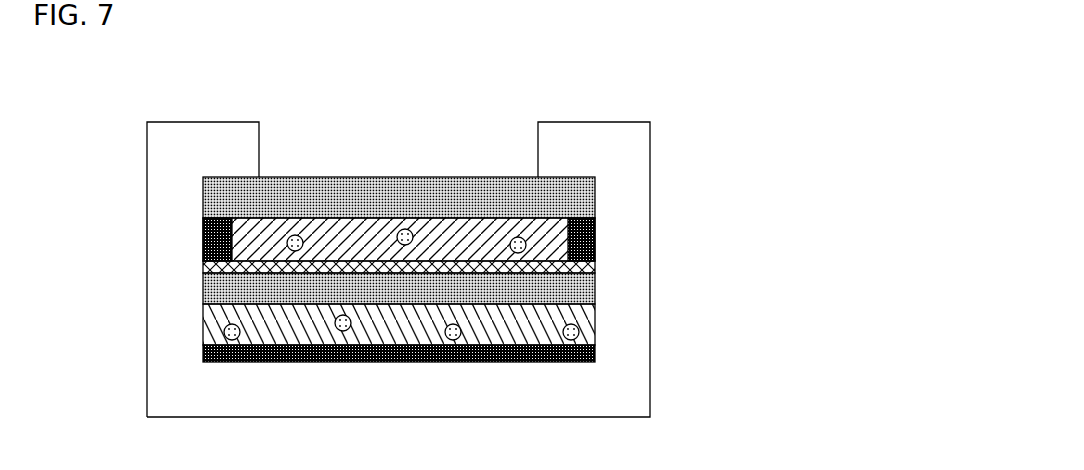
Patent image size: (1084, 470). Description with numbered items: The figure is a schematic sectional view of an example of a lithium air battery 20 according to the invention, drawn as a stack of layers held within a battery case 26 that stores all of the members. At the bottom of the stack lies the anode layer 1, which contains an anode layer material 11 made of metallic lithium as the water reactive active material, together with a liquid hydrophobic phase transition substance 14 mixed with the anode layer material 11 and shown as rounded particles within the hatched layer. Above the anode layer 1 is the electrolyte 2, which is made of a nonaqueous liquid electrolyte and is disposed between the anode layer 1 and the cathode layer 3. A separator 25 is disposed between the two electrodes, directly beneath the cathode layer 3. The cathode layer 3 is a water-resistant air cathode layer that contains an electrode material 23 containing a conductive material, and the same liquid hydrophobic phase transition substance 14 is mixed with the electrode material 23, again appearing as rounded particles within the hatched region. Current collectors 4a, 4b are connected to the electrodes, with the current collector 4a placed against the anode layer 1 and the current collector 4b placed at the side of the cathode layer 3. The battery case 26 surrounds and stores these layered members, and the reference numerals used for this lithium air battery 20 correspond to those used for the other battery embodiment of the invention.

The lithium air battery 20 is at (674, 88).
The battery case 26 is at (622, 186).
The cathode layer 3 is at (438, 236).
The electrode material 23 is at (537, 238).
The liquid hydrophobic phase transition substance 14 is at (526, 245).
The current collector 4b is at (203, 238).
The separator 25 is at (255, 270).
The electrolyte 2 is at (595, 288).
The anode layer 1 is at (492, 321).
The anode layer material 11 is at (585, 310).
The current collector 4a is at (203, 355).